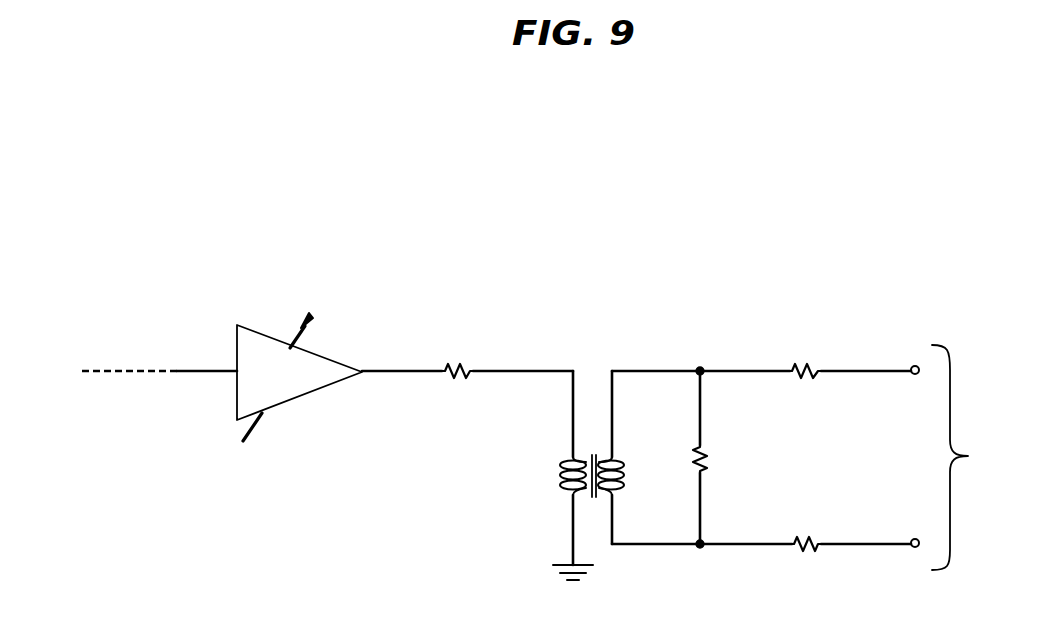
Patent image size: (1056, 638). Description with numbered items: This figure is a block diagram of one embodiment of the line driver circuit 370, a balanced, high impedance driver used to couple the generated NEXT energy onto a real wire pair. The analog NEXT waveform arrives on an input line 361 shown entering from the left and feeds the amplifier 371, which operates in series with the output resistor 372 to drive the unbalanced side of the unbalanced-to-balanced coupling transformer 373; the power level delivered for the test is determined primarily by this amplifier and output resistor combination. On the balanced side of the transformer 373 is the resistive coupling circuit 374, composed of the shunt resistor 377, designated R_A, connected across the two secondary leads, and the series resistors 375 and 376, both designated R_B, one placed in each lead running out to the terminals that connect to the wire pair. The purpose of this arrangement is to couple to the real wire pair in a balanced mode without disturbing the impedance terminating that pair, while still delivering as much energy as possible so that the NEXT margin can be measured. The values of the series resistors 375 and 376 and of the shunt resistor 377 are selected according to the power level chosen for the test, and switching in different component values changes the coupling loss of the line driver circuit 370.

The line driver circuit 370 is at (587, 196).
The input line 361 is at (178, 371).
The amplifier 371 is at (340, 360).
The output resistor 372 is at (456, 362).
The unbalanced-to-balanced coupling transformer 373 is at (557, 481).
The resistive coupling circuit 374 is at (700, 370).
The series resistor 375 is at (810, 377).
The series resistor 376 is at (798, 535).
The shunt resistor 377 is at (696, 452).